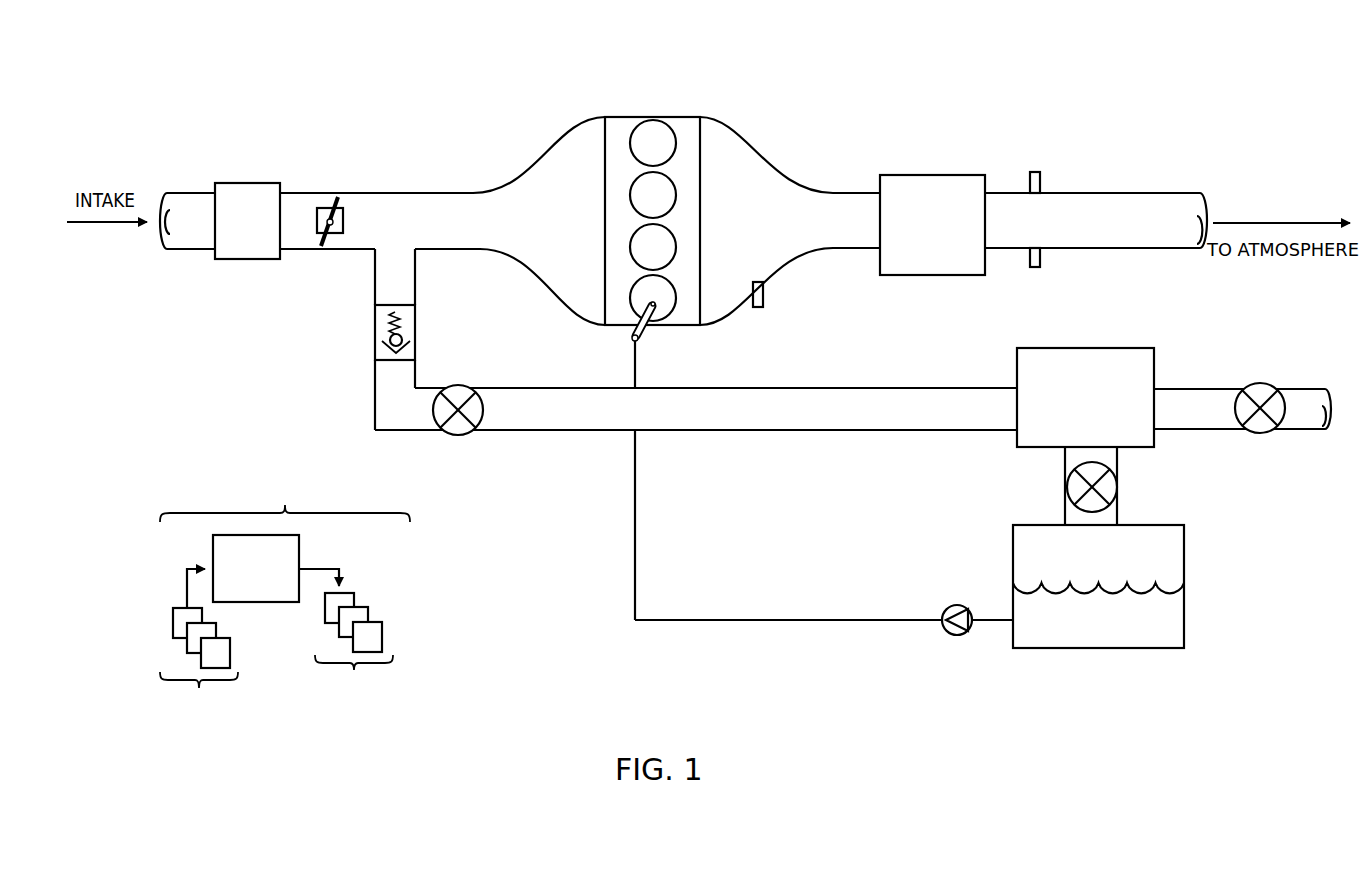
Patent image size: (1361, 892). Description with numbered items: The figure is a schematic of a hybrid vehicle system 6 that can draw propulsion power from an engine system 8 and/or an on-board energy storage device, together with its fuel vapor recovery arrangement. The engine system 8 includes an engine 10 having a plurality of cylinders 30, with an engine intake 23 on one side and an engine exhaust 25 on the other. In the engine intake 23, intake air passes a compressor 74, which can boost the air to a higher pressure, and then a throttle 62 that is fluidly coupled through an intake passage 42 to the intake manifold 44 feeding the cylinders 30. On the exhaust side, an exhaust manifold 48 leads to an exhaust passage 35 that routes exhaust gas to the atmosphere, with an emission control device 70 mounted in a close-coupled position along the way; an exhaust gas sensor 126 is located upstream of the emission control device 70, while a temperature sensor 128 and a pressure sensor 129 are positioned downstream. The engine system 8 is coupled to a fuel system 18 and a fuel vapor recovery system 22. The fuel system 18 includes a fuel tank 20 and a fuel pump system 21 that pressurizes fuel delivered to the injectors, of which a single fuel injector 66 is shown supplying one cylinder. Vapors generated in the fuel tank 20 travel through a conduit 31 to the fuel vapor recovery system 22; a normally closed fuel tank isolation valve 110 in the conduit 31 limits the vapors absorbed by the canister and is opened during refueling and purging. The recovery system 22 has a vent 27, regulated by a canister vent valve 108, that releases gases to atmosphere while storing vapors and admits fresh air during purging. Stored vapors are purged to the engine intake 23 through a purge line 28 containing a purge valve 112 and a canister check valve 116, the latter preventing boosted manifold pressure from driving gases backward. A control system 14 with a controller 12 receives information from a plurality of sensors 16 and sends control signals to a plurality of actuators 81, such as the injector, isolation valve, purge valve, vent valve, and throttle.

The hybrid vehicle system 6 is at (145, 56).
The engine system 8 is at (1024, 43).
The engine 10 is at (667, 221).
The controller 12 is at (256, 568).
The control system 14 is at (285, 596).
The sensors 16 is at (199, 648).
The fuel system 18 is at (1108, 692).
The fuel tank 20 is at (1200, 624).
The fuel pump system 21 is at (955, 606).
The fuel vapor recovery system 22 is at (1154, 380).
The engine intake 23 is at (530, 146).
The engine exhaust 25 is at (813, 151).
The vent 27 is at (1212, 418).
The purge line 28 is at (566, 419).
The cylinders 30 is at (675, 138).
The conduit 31 is at (1117, 513).
The exhaust passage 35 is at (1151, 193).
The intake passage 42 is at (362, 253).
The intake manifold 44 is at (570, 231).
The exhaust manifold 48 is at (780, 231).
The throttle 62 is at (343, 232).
The fuel injector 66 is at (642, 336).
The emission control device 70 is at (918, 176).
The compressor 74 is at (256, 183).
The actuators 81 is at (347, 639).
The canister vent valve 108 is at (1260, 383).
The fuel tank isolation valve 110 is at (1065, 494).
The purge valve 112 is at (462, 386).
The canister check valve 116 is at (415, 330).
The exhaust gas sensor 126 is at (766, 283).
The temperature sensor 128 is at (1030, 258).
The pressure sensor 129 is at (1030, 186).